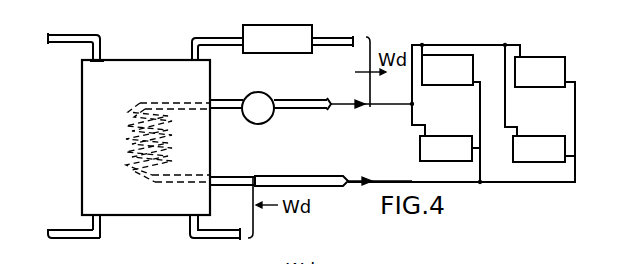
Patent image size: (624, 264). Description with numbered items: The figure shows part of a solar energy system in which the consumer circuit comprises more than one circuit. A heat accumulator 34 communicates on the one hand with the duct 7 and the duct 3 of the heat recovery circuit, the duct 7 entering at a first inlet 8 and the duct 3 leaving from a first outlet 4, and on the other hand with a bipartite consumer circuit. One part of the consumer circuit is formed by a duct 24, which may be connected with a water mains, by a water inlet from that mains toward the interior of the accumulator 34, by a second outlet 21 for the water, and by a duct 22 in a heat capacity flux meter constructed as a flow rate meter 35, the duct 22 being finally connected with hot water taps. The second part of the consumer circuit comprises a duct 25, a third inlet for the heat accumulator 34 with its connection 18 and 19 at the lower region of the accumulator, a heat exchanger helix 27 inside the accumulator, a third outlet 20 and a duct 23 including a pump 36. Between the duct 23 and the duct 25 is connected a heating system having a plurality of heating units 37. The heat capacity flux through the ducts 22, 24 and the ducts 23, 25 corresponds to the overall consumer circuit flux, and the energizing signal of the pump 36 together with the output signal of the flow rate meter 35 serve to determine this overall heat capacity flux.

The duct 3 is at (61, 230).
The first outlet 4 is at (97, 215).
The duct 7 is at (68, 40).
The first inlet 8 is at (104, 59).
The return line 18 is at (219, 177).
The lower connection 19 is at (193, 214).
The third outlet 20 is at (208, 98).
The second outlet 21 is at (192, 58).
The duct 22 is at (222, 37).
The duct 23 is at (286, 100).
The duct 24 is at (228, 231).
The duct 25 is at (320, 177).
The heat exchanger helix 27 is at (136, 108).
The heat accumulator 34 is at (88, 130).
The flow rate meter 35 is at (299, 43).
The pump 36 is at (258, 108).
The heating units 37 is at (520, 78).